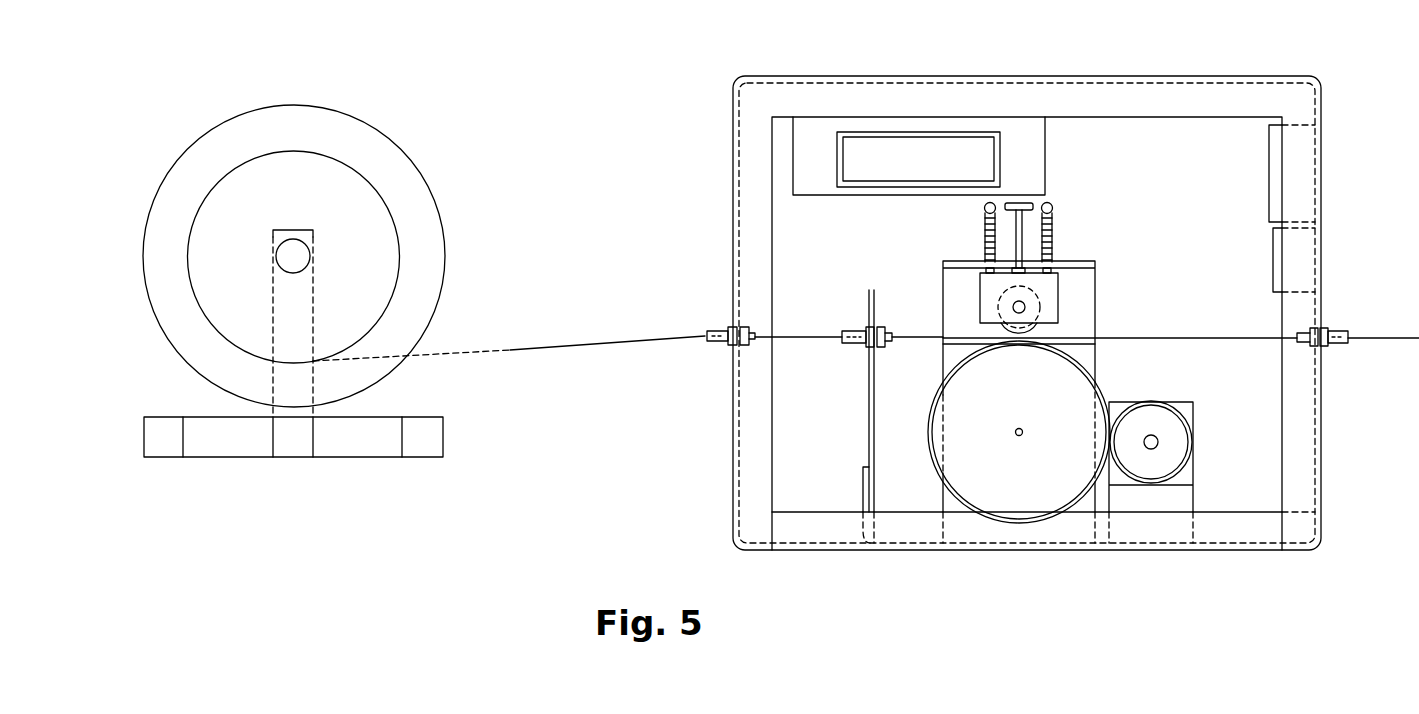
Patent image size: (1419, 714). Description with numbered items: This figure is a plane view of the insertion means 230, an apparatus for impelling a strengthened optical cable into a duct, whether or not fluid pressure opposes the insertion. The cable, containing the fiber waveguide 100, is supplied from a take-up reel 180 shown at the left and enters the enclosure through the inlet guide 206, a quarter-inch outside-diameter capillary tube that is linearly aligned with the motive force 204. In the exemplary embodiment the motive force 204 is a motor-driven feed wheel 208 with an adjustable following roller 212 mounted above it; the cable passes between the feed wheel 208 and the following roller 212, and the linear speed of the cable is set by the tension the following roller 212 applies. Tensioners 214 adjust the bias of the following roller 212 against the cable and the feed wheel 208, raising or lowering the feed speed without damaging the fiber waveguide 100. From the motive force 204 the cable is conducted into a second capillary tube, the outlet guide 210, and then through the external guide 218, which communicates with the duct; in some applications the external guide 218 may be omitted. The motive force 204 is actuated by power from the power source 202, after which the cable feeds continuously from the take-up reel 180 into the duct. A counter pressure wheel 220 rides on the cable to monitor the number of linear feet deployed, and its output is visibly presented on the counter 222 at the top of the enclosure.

The fiber waveguide 100 is at (605, 345).
The take-up reel 180 is at (408, 181).
The power source 202 is at (1298, 177).
The motive force 204 is at (988, 375).
The inlet guide 206 is at (1340, 332).
The feed wheel 208 is at (962, 402).
The outlet guide 210 is at (853, 333).
The following roller 212 is at (1000, 328).
The tensioners 214 is at (983, 228).
The external guide 218 is at (716, 330).
The counter pressure wheel 220 is at (1170, 422).
The counter 222 is at (1027, 150).
The insertion means 230 is at (1228, 76).